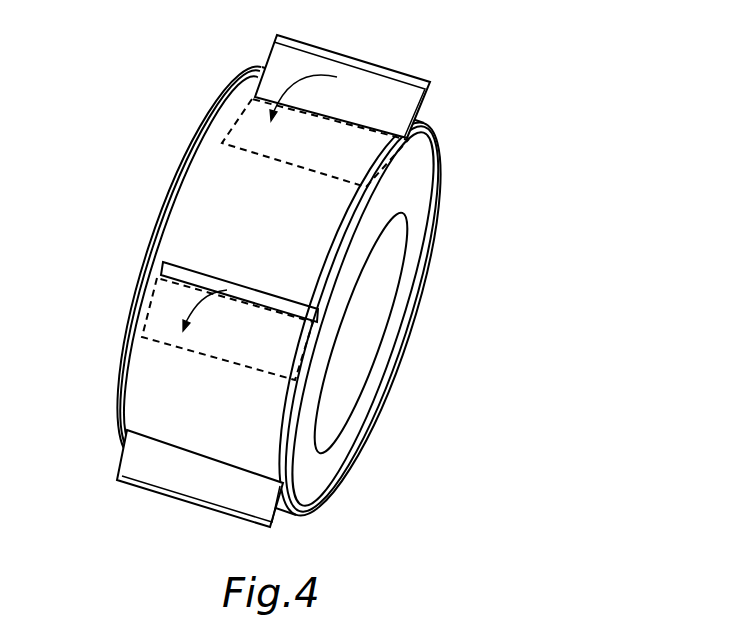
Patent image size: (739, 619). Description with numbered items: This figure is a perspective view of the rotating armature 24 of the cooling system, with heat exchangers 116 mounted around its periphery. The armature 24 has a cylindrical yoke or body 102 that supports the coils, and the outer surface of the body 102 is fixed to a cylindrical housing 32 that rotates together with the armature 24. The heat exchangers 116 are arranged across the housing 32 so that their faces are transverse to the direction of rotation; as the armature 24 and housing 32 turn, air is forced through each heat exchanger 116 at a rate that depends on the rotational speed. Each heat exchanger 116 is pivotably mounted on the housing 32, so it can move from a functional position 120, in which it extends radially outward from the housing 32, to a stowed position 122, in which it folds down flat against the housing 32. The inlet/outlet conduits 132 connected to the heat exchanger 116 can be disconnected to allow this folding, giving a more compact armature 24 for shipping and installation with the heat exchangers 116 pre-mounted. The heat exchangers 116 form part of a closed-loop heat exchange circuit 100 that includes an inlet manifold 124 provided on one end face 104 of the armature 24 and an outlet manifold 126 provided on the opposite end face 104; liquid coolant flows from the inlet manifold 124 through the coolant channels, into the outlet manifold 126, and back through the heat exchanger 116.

The armature 24 is at (548, 147).
The housing 32 is at (197, 210).
The heat exchange circuit 100 is at (678, 617).
The body 102 is at (312, 514).
The end face 104 is at (413, 268).
The heat exchanger 116 is at (365, 103).
The functional position 120 is at (212, 60).
The stowed position 122 is at (224, 352).
The inlet manifold 124 is at (127, 313).
The outlet manifold 126 is at (443, 167).
The inlet/outlet conduits 132 is at (437, 123).